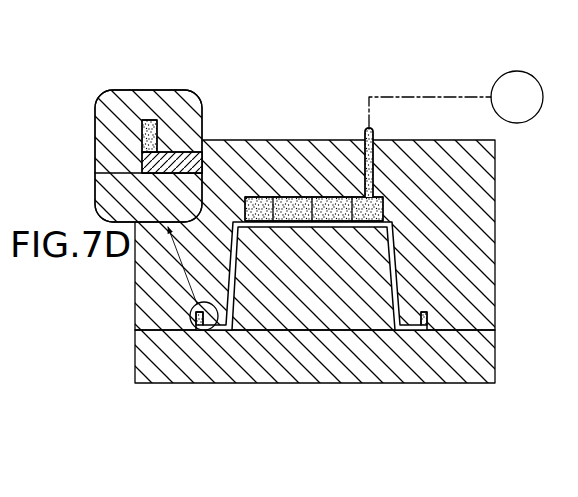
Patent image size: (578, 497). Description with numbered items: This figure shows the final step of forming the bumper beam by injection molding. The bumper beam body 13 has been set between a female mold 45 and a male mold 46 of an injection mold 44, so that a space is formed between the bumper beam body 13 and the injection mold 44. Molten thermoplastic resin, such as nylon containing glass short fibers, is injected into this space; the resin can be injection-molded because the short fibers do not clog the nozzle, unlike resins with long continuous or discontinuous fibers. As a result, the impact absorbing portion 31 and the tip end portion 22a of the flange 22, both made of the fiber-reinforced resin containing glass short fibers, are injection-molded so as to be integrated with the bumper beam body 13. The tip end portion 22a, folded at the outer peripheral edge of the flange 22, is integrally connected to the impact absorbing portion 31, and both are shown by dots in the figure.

The bumper beam body 13 is at (287, 197).
The impact absorbing portion 31 is at (331, 196).
The flange 22 is at (182, 147).
The tip end portion 22a is at (150, 120).
The injection mold 44 is at (247, 253).
The female mold 45 is at (133, 282).
The male mold 46 is at (170, 389).